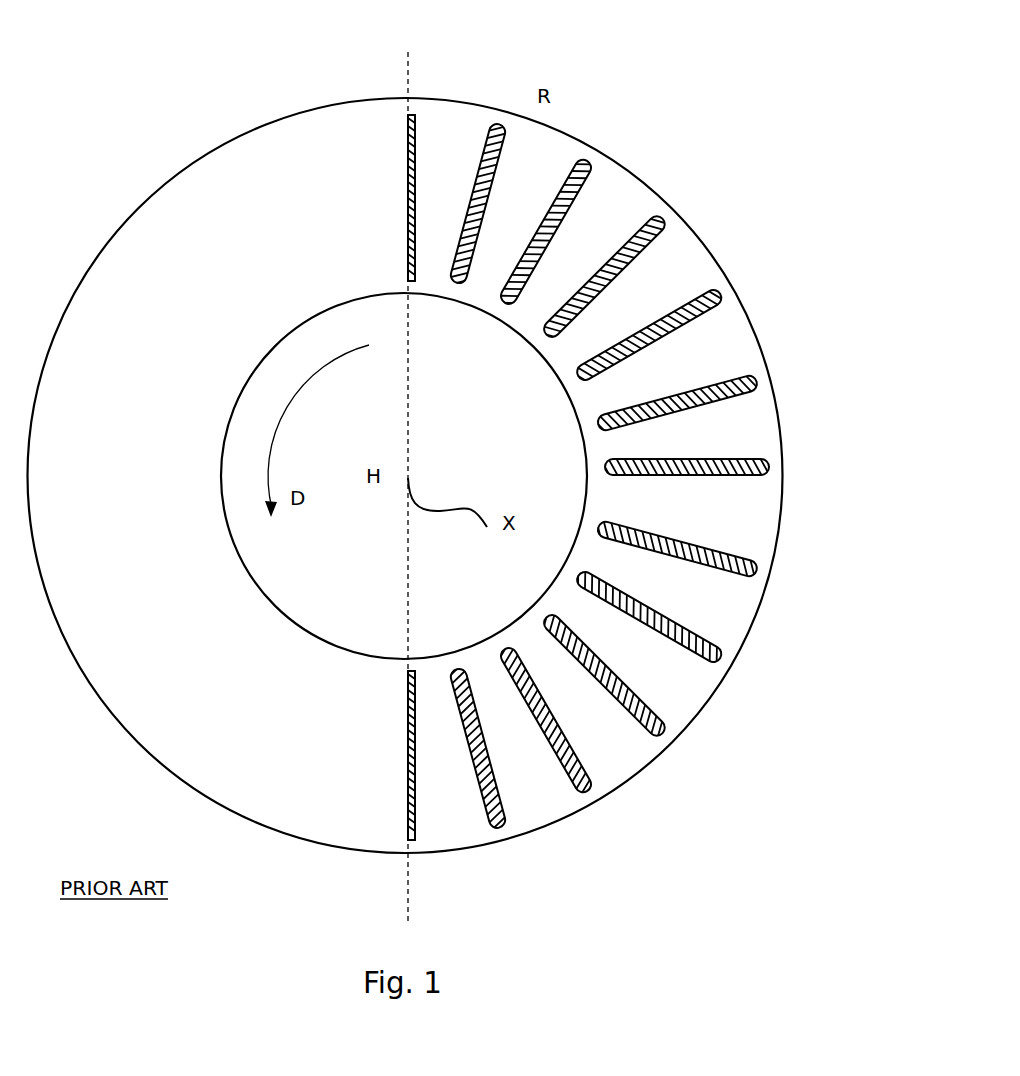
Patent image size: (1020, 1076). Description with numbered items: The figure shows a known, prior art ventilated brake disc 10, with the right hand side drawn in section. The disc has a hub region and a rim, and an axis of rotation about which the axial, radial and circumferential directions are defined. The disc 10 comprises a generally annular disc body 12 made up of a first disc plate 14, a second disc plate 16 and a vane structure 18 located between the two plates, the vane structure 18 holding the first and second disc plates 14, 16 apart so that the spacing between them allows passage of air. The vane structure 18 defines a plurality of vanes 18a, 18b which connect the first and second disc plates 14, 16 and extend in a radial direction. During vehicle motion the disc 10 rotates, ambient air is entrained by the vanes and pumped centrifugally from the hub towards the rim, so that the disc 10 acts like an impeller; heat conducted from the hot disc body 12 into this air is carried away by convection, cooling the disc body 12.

The ventilated disc 10 is at (126, 172).
The disc body 12 is at (332, 147).
The first disc plate 14 is at (169, 379).
The second disc plate 16 is at (719, 368).
The vane structure 18 is at (776, 252).
The vane 18a is at (586, 170).
The vane 18b is at (558, 342).